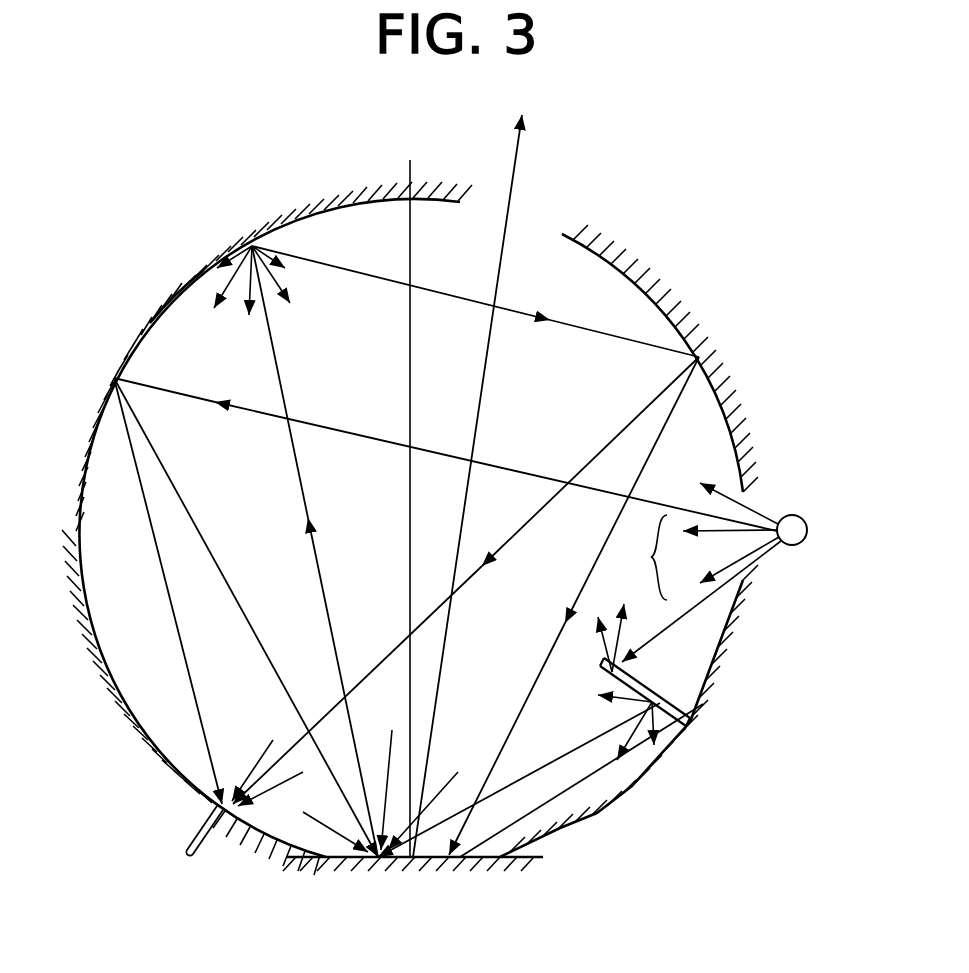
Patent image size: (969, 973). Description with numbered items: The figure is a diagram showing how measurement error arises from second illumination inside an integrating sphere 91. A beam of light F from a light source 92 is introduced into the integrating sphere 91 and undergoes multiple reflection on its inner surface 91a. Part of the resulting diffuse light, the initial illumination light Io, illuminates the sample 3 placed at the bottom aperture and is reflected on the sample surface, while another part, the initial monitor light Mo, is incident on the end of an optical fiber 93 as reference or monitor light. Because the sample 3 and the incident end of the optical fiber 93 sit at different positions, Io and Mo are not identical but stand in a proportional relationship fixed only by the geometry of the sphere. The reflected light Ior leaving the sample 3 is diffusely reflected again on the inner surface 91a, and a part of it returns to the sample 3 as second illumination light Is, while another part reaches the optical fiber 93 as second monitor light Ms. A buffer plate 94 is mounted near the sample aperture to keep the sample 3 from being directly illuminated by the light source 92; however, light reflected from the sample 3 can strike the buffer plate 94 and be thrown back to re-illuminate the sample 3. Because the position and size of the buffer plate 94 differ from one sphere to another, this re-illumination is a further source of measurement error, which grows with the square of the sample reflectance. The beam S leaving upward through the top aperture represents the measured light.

The integrating sphere 91 is at (686, 334).
The inner surface of the integrating sphere 91a is at (160, 318).
The light source 92 is at (794, 515).
The optical fiber 93 is at (197, 838).
The buffer plate 94 is at (677, 710).
The sample 3 is at (530, 862).
The measurement light beam S is at (522, 182).
The beam of light F is at (701, 572).
The second monitor light Ms is at (622, 433).
The second illumination light Is is at (552, 645).
The reflected light Ior is at (287, 420).
The initial illumination light Io is at (232, 572).
The initial monitor light Mo is at (190, 672).